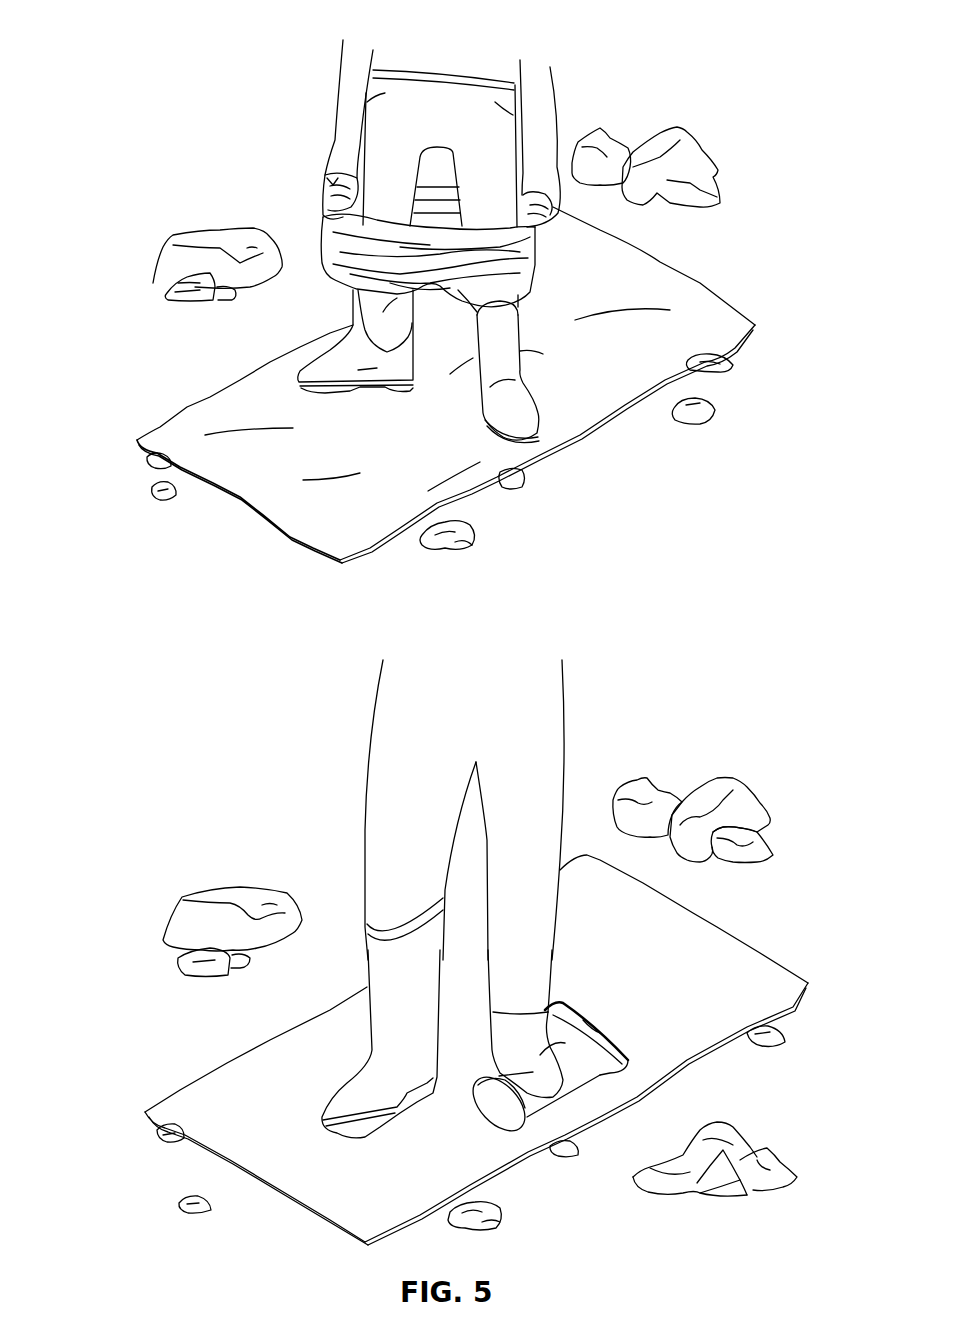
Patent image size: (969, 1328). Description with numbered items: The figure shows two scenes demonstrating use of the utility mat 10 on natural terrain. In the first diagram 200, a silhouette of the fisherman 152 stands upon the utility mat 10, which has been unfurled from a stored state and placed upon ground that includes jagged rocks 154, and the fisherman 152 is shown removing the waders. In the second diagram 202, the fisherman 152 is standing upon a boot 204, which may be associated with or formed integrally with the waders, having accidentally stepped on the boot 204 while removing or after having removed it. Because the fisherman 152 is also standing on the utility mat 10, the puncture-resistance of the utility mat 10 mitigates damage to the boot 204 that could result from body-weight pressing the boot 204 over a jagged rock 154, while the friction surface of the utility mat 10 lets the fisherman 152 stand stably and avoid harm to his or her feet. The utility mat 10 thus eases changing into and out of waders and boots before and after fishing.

The utility mat 10 is at (690, 292).
The fisherman 152 is at (340, 120).
The jagged rocks 154 is at (713, 113).
The first diagram 200 is at (112, 46).
The second diagram 202 is at (126, 786).
The boot 204 is at (620, 1040).